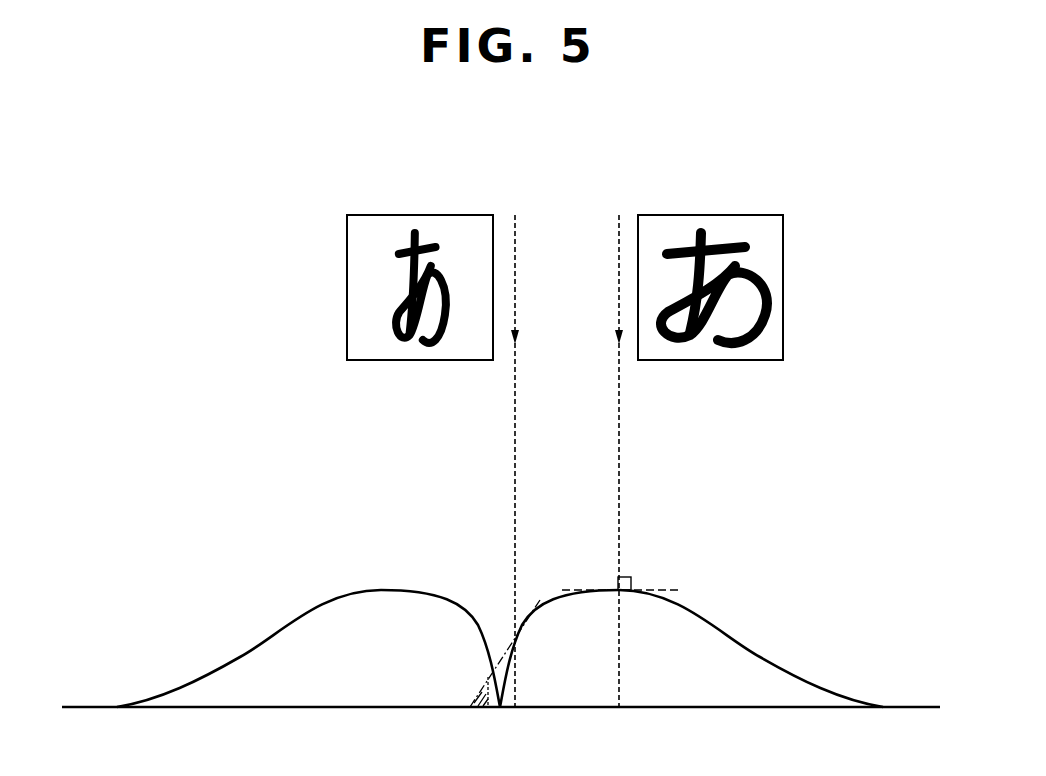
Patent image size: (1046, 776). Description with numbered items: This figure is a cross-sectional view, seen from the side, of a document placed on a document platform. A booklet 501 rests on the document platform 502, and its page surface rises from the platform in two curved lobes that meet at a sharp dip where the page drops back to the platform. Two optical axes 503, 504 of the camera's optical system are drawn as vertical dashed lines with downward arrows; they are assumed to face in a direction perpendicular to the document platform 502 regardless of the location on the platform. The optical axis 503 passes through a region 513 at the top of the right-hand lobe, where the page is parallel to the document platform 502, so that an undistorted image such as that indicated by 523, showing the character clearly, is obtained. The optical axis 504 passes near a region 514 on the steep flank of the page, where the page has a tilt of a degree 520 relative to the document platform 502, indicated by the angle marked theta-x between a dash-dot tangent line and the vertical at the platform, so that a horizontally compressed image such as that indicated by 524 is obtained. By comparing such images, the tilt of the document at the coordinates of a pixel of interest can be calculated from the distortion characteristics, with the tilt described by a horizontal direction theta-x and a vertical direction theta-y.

The booklet 501 is at (838, 665).
The document platform 502 is at (930, 688).
The optical axis 503 is at (617, 227).
The optical axis 504 is at (517, 227).
The region 513 is at (632, 577).
The region 514 is at (516, 632).
The tilt degree 520 is at (488, 680).
The image 523 is at (762, 213).
The image 524 is at (374, 213).